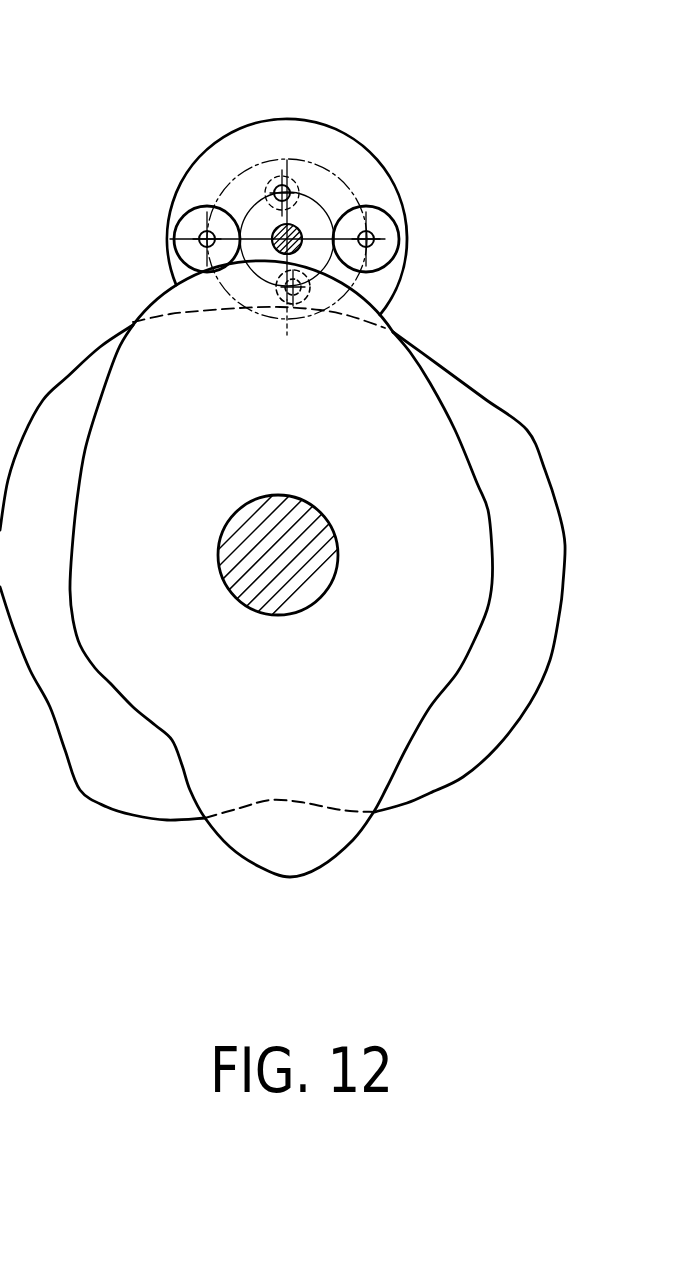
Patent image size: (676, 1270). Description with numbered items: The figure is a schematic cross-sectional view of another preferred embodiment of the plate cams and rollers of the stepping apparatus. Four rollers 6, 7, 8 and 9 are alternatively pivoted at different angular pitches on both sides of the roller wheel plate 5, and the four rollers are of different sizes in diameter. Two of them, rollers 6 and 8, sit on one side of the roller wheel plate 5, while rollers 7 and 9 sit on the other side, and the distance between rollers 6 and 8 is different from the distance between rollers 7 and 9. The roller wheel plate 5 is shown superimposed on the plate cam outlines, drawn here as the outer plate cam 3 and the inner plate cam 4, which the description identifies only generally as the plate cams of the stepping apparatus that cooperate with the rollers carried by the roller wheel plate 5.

The body 3 is at (513, 453).
The inner member 4 is at (325, 857).
The roller wheel plate 5 is at (347, 147).
The roller 6 is at (380, 223).
The roller 7 is at (292, 176).
The roller 8 is at (182, 222).
The roller 9 is at (313, 306).